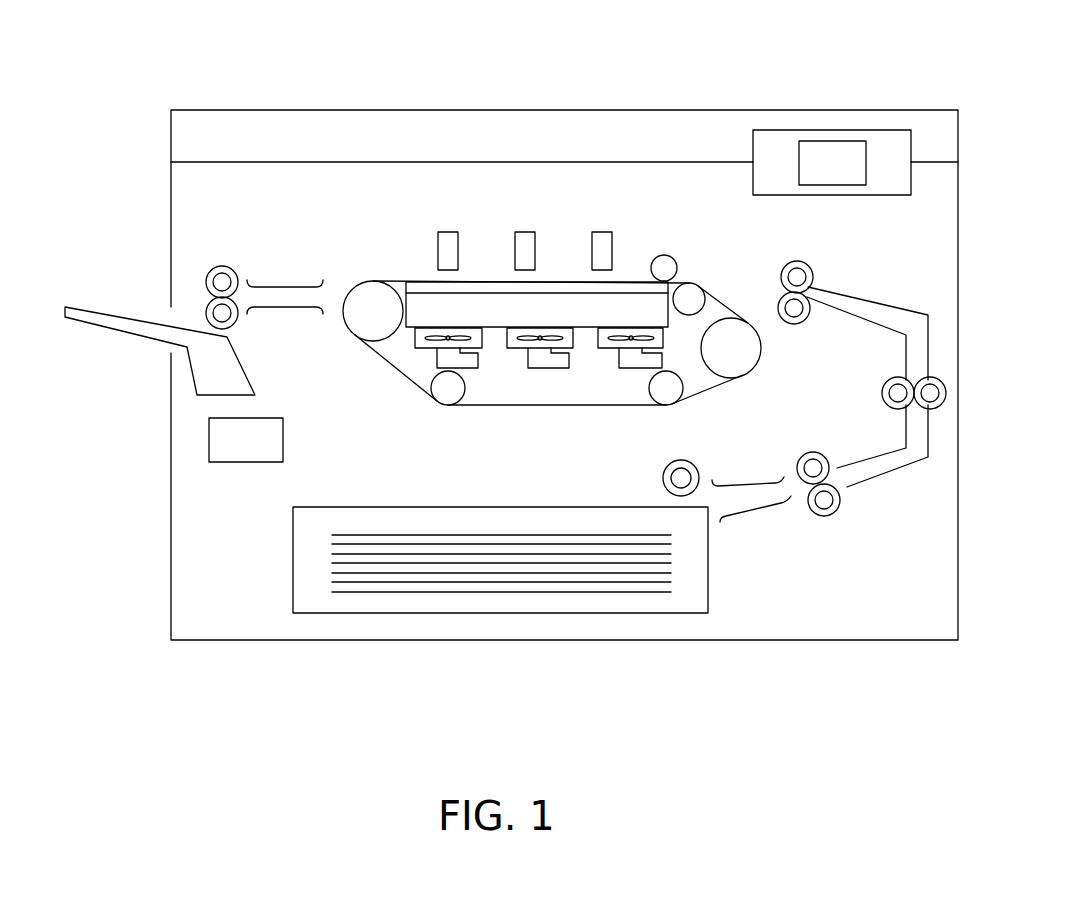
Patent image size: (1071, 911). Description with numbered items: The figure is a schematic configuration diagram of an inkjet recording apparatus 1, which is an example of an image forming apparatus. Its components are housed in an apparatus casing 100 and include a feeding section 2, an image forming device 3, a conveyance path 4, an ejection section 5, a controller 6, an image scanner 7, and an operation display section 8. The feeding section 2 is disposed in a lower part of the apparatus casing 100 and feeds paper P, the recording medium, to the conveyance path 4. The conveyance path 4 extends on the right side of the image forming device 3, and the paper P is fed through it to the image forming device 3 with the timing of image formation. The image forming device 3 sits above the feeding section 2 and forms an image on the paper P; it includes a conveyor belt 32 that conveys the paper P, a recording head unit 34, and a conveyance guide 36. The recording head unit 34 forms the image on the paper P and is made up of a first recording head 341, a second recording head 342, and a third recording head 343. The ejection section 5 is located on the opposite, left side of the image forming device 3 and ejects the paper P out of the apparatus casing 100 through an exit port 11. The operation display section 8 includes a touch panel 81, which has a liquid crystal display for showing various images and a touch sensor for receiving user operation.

The inkjet recording apparatus 1 is at (430, 668).
The apparatus casing 100 is at (740, 642).
The feeding section 2 is at (282, 585).
The paper P is at (382, 593).
The image forming device 3 is at (327, 225).
The conveyor belt 32 is at (393, 372).
The recording head unit 34 is at (627, 68).
The first recording head 341 is at (607, 232).
The second recording head 342 is at (528, 232).
The third recording head 343 is at (450, 232).
The conveyance guide 36 is at (247, 283).
The conveyance path 4 is at (903, 300).
The ejection section 5 is at (185, 248).
The controller 6 is at (223, 438).
The image scanner 7 is at (818, 118).
The operation display section 8 is at (893, 128).
The touch panel 81 is at (846, 138).
The exit port 11 is at (168, 315).